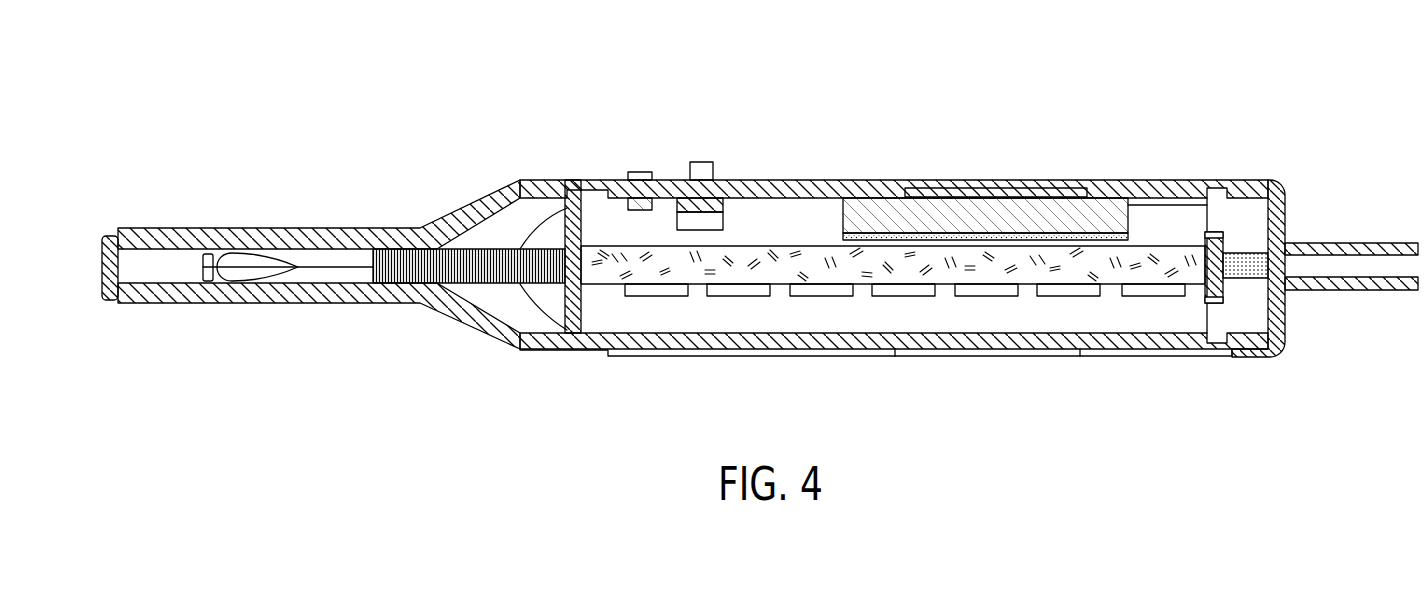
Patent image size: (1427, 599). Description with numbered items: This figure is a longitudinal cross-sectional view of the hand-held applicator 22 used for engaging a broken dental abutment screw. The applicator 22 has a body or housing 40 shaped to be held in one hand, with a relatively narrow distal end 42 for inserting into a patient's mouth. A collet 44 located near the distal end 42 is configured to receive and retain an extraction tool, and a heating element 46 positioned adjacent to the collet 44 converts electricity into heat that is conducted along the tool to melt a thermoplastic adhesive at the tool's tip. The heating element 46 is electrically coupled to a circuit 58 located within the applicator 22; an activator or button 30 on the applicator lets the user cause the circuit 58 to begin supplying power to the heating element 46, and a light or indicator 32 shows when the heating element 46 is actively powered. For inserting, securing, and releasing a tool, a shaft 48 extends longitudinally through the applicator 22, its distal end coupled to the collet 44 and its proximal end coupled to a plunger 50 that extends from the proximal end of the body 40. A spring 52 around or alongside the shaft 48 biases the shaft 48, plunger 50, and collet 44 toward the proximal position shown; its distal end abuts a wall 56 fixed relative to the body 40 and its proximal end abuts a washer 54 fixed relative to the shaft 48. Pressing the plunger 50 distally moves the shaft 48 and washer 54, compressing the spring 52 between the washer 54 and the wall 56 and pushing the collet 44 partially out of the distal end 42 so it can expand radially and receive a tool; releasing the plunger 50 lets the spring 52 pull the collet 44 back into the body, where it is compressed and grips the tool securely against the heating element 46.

The applicator 22 is at (442, 120).
The activator 30 is at (698, 162).
The light 32 is at (642, 172).
The housing 40 is at (723, 349).
The distal end 42 is at (103, 240).
The collet 44 is at (260, 255).
The heating element 46 is at (453, 260).
The shaft 48 is at (1243, 255).
The plunger 50 is at (1385, 243).
The spring 52 is at (763, 265).
The washer 54 is at (1212, 245).
The wall 56 is at (568, 198).
The circuit 58 is at (1038, 205).